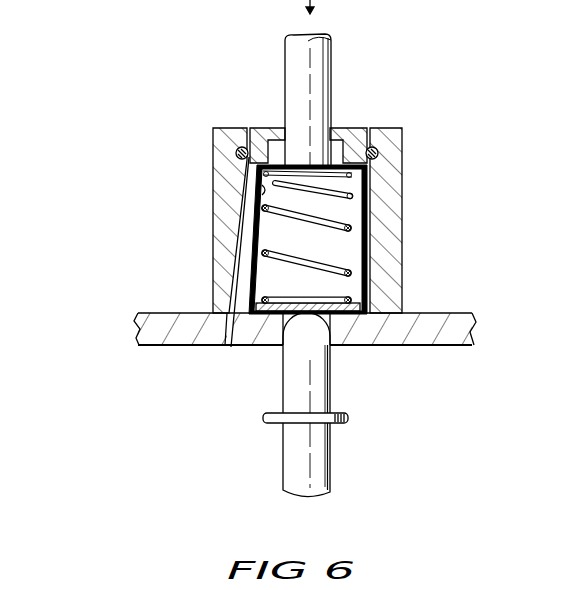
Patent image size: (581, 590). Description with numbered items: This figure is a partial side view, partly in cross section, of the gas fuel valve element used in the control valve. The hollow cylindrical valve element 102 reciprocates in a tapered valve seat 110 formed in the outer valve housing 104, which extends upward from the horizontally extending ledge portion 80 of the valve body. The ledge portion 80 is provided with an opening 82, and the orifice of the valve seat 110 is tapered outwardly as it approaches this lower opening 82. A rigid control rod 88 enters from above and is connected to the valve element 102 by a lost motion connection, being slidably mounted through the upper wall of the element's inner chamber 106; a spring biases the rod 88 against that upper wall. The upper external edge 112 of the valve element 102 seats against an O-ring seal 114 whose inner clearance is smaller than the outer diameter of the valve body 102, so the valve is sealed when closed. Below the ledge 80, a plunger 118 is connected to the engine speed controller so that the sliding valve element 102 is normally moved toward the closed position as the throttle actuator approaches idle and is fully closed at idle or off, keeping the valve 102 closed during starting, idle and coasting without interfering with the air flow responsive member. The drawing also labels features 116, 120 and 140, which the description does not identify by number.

The horizontally extending ledge portion 80 is at (432, 322).
The opening 82 is at (342, 340).
The rigid control rod 88 is at (317, 71).
The valve element 102 is at (368, 257).
The outer valve housing 104 is at (397, 173).
The inner chamber 106 is at (342, 242).
The tapered valve seat 110 is at (240, 259).
The upper external edge 112 is at (262, 132).
The O-ring seal 114 is at (236, 153).
The washer 116 is at (260, 188).
The plunger 118 is at (297, 378).
The cup bottom 120 is at (360, 318).
The lead wire 140 is at (231, 347).